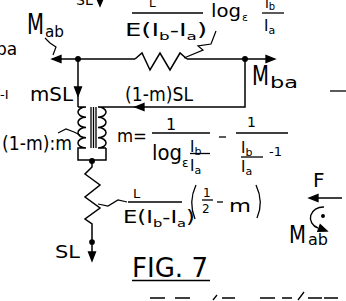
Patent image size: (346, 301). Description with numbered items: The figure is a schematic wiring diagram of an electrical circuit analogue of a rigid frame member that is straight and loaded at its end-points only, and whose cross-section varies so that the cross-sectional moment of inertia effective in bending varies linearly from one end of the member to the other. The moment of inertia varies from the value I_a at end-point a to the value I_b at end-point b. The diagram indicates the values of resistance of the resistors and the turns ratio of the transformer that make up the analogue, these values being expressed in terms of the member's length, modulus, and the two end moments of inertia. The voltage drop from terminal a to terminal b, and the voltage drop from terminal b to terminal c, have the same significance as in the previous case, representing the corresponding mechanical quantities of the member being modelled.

The end-point a is at (74, 47).
The end-point b is at (242, 51).
The terminal c is at (98, 238).